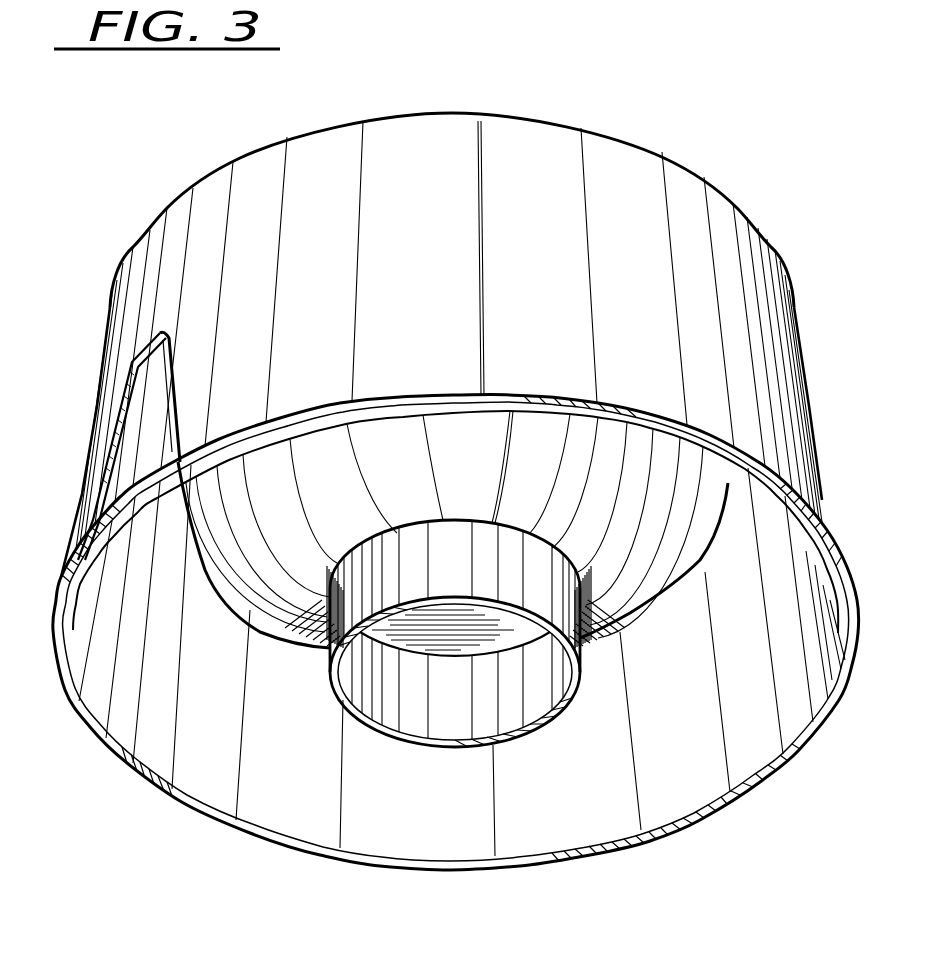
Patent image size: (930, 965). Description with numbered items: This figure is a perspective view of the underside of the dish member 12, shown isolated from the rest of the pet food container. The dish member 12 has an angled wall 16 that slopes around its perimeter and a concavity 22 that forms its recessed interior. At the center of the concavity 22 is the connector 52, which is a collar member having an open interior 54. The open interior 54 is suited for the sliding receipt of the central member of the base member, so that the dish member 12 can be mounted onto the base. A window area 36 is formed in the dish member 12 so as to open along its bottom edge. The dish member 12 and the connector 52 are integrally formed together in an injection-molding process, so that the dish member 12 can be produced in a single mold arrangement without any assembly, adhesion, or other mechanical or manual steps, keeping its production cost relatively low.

The dish member 12 is at (217, 832).
The angled wall 16 is at (731, 237).
The concavity 22 is at (470, 470).
The window area 36 is at (142, 439).
The connector 52 is at (311, 636).
The open interior 54 is at (513, 690).